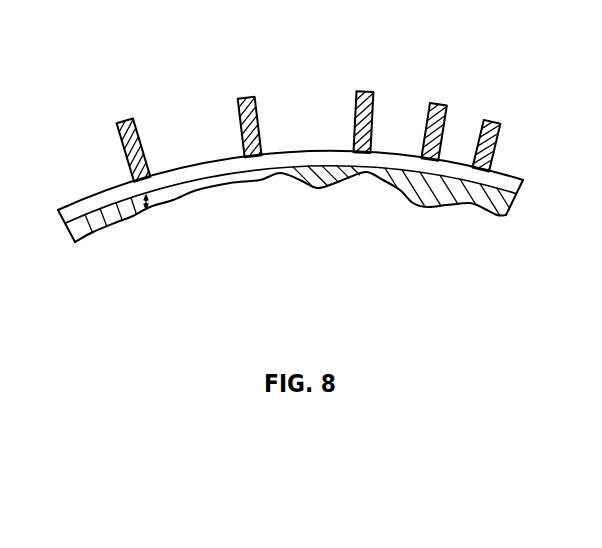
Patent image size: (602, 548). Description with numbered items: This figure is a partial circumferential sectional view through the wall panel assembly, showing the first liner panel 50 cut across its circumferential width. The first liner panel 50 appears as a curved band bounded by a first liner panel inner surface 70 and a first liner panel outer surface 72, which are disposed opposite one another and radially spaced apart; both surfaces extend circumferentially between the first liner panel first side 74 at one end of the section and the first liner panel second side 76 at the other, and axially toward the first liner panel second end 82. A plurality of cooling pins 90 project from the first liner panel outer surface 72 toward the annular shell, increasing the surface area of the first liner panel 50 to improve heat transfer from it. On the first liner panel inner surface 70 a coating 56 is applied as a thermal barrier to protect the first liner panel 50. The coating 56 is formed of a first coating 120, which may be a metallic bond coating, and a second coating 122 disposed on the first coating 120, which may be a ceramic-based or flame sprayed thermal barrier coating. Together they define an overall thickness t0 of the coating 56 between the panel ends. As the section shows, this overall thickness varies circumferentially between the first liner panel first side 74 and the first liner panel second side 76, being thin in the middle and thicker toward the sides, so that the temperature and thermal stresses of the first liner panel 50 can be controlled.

The first liner panel 50 is at (301, 175).
The coating 56 is at (378, 200).
The first liner panel inner surface 70 is at (309, 181).
The first liner panel outer surface 72 is at (301, 172).
The first liner panel first side 74 is at (57, 217).
The first liner panel second side 76 is at (524, 186).
The first liner panel second end 82 is at (188, 176).
The plurality of cooling pins 90 is at (437, 89).
The first coating 120 is at (466, 217).
The second coating 122 is at (452, 192).
The overall thickness t0 is at (146, 209).